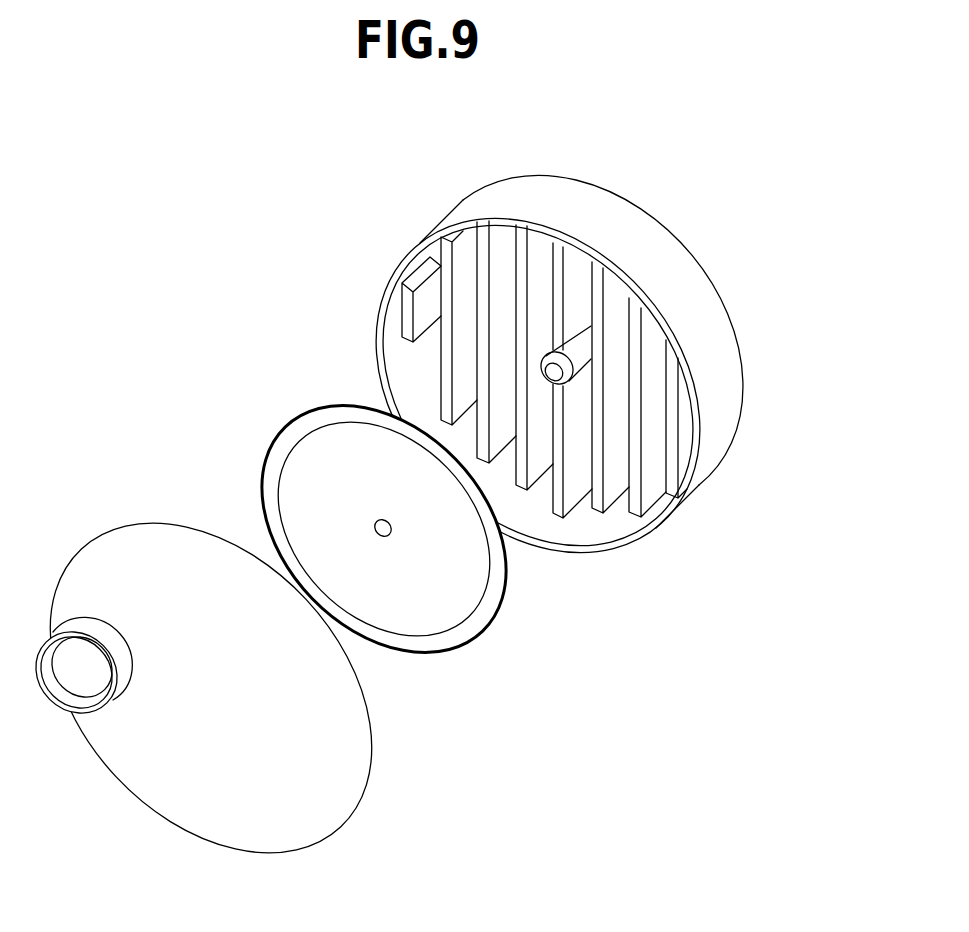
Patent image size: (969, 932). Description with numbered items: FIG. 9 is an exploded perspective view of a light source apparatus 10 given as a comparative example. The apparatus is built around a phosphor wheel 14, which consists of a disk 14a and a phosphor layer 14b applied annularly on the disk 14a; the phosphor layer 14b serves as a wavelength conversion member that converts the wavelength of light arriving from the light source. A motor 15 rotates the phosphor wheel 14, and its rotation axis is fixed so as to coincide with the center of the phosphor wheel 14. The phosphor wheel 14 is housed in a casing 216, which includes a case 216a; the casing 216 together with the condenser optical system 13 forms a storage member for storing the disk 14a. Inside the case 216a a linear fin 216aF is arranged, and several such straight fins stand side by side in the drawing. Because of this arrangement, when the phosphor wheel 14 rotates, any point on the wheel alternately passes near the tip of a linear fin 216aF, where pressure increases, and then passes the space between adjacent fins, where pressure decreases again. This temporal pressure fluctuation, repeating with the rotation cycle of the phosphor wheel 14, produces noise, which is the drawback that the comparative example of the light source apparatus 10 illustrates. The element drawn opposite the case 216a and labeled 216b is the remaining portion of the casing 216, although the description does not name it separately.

The light source apparatus 10 is at (757, 149).
The condenser optical system 13 is at (102, 625).
The phosphor wheel 14 is at (340, 307).
The disk 14a is at (300, 490).
The phosphor layer 14b is at (312, 423).
The motor 15 is at (571, 362).
The casing 216 is at (679, 643).
The case 216a is at (575, 416).
The linear fin 216aF is at (653, 443).
The lens cover 216b is at (337, 733).